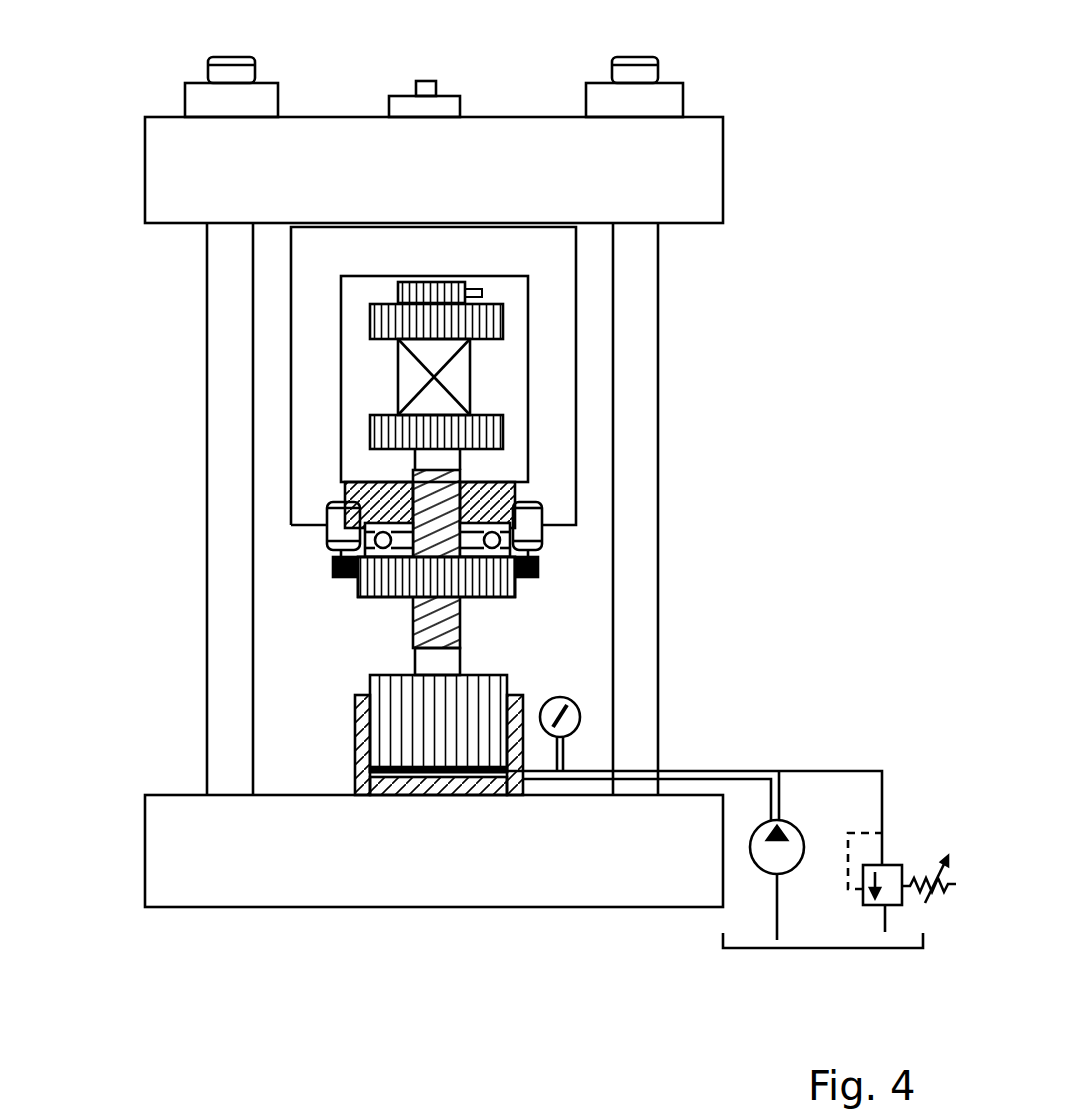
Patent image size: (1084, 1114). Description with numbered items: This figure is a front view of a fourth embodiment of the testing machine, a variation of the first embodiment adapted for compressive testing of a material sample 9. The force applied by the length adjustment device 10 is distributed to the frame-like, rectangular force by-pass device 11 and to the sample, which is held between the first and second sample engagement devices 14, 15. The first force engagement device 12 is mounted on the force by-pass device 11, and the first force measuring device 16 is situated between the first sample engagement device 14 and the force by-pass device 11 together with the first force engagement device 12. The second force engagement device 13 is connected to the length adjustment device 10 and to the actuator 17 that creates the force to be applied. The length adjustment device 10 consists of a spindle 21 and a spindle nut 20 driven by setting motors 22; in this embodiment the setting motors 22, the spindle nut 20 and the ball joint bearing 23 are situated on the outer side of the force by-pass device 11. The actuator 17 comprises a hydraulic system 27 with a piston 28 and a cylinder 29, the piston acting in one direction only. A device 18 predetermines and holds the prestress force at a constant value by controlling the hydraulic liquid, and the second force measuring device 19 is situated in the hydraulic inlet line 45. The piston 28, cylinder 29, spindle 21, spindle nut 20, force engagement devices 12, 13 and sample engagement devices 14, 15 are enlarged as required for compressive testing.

The material sample 9 is at (405, 367).
The length adjustment device 10 is at (342, 585).
The force by-pass device 11 is at (572, 379).
The first force engagement device 12 is at (447, 106).
The second force engagement device 13 is at (428, 656).
The first sample engagement device 14 is at (503, 322).
The second sample engagement device 15 is at (392, 427).
The first force measuring device 16 is at (482, 293).
The actuator 17 is at (350, 727).
The device defining the prestress force 18 is at (885, 865).
The second force measuring device 19 is at (577, 717).
The spindle nut 20 is at (497, 575).
The spindle 21 is at (458, 476).
The setting motors 22 is at (340, 527).
The axial ball bearing 23 is at (498, 540).
The hydraulic system 27 is at (432, 800).
The piston 28 is at (368, 682).
The cylinder 29 is at (512, 707).
The hydraulic inlet line 45 is at (543, 775).